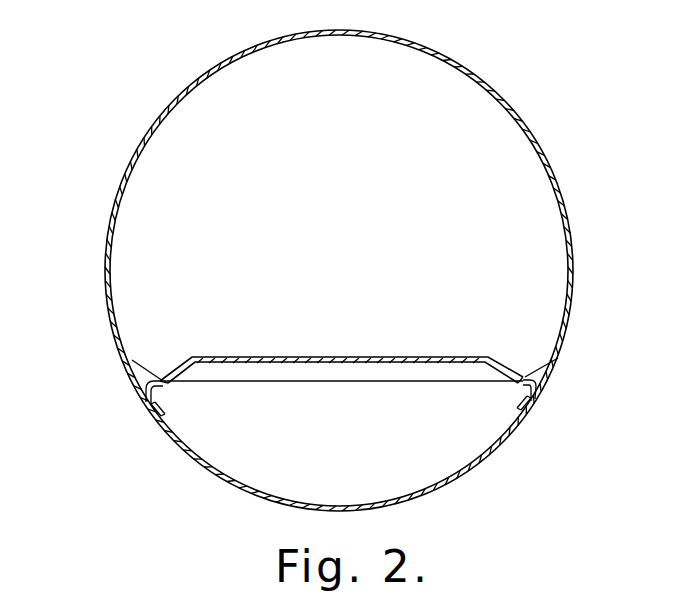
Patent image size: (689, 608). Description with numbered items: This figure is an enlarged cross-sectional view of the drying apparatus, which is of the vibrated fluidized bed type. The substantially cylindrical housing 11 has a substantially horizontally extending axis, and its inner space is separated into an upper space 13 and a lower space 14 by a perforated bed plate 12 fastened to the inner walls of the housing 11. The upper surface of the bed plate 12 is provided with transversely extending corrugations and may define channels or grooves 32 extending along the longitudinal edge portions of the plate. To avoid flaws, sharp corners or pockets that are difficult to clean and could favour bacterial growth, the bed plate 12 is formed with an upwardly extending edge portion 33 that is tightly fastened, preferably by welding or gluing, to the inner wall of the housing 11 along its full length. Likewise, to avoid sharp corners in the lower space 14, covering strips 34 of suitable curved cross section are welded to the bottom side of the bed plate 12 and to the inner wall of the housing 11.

The housing 11 is at (533, 133).
The perforated bed plate 12 is at (435, 355).
The upper space 13 is at (432, 72).
The lower space 14 is at (457, 444).
The channels or grooves 32 is at (138, 368).
The upwardly extending edge portion 33 is at (128, 374).
The covering strips 34 is at (145, 405).